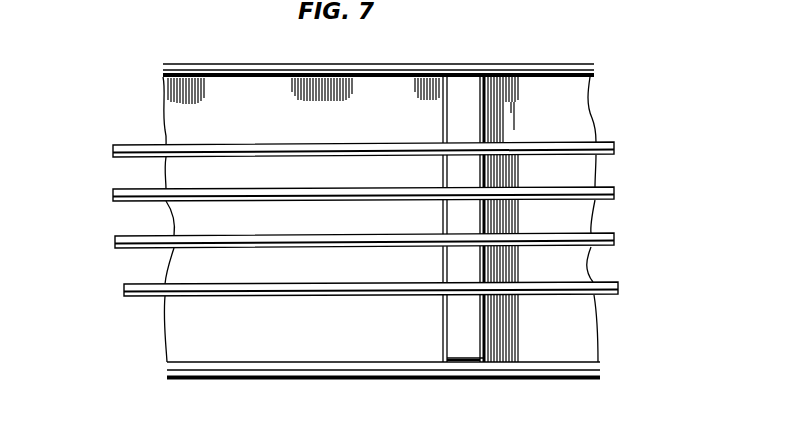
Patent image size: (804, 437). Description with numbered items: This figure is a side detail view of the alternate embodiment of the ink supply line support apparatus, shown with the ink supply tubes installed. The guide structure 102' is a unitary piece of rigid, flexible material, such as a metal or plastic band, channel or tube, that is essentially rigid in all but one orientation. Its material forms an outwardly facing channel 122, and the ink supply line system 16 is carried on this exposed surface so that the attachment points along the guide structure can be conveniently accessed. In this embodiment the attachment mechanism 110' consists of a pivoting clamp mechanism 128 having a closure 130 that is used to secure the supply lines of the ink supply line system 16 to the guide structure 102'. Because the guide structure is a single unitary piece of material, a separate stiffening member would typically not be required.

The guide structure 102' is at (326, 227).
The outwardly facing channel 122 is at (592, 118).
The ink supply line system 16 is at (618, 186).
The closure 130 is at (443, 337).
The attachment mechanism 110' is at (488, 392).
The pivoting clamp mechanism 128 is at (480, 323).